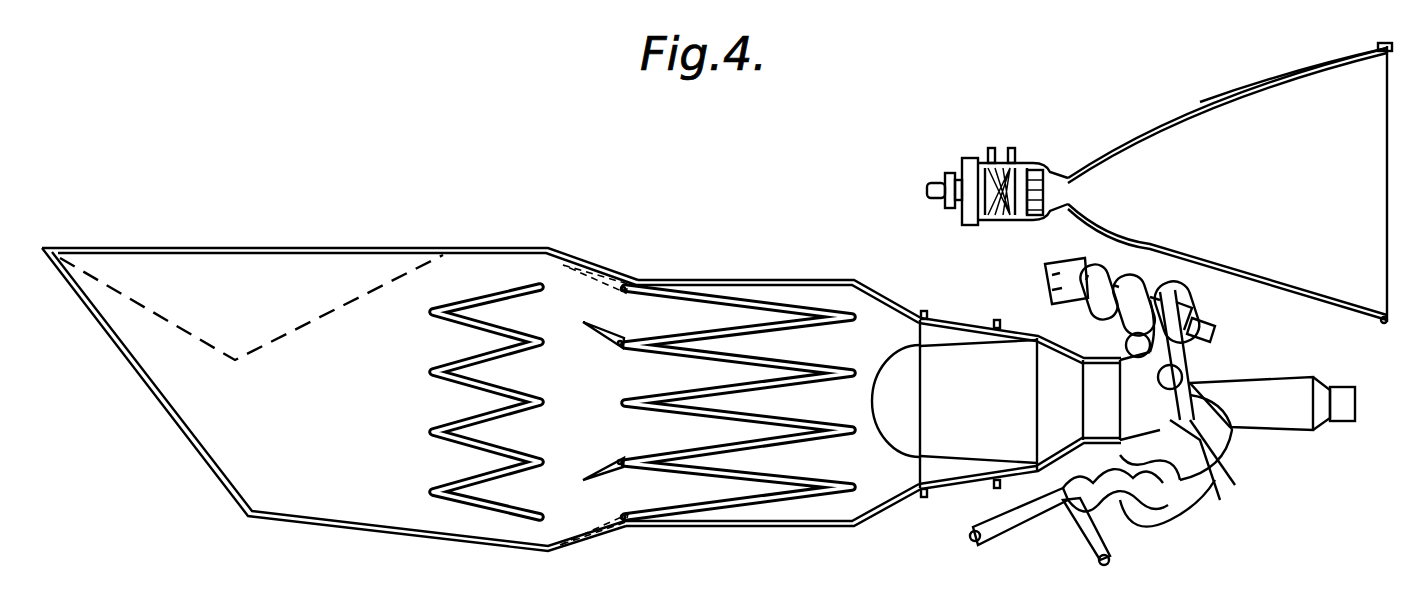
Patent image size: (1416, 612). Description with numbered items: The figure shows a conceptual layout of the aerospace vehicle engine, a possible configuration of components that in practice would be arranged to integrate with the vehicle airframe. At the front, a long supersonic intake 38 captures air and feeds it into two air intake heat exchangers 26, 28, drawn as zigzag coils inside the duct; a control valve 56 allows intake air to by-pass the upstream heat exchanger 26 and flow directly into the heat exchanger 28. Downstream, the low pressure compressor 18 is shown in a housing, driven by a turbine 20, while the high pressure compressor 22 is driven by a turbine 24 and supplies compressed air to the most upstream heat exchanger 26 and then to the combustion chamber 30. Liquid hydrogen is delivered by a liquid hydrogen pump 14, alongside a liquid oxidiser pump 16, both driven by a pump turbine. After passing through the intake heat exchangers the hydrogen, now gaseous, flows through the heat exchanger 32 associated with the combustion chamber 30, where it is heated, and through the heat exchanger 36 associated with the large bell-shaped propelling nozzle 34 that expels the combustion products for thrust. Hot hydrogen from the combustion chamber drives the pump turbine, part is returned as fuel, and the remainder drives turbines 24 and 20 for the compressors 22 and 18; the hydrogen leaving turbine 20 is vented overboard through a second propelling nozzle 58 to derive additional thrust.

The liquid hydrogen pump 14 is at (1085, 275).
The liquid oxidiser pump 16 is at (1205, 310).
The low pressure compressor 18 is at (930, 330).
The turbine 20 is at (1190, 383).
The high pressure compressor 22 is at (1138, 535).
The turbine 24 is at (1168, 500).
The air intake heat exchanger 26 is at (490, 503).
The air intake heat exchanger 28 is at (748, 502).
The combustion chamber 30 is at (985, 215).
The heat exchanger 32 is at (1000, 210).
The propelling nozzle 34 is at (1290, 196).
The heat exchanger 36 is at (1277, 85).
The supersonic intake 38 is at (222, 455).
The control valve 56 is at (598, 322).
The propelling nozzle 58 is at (1337, 410).